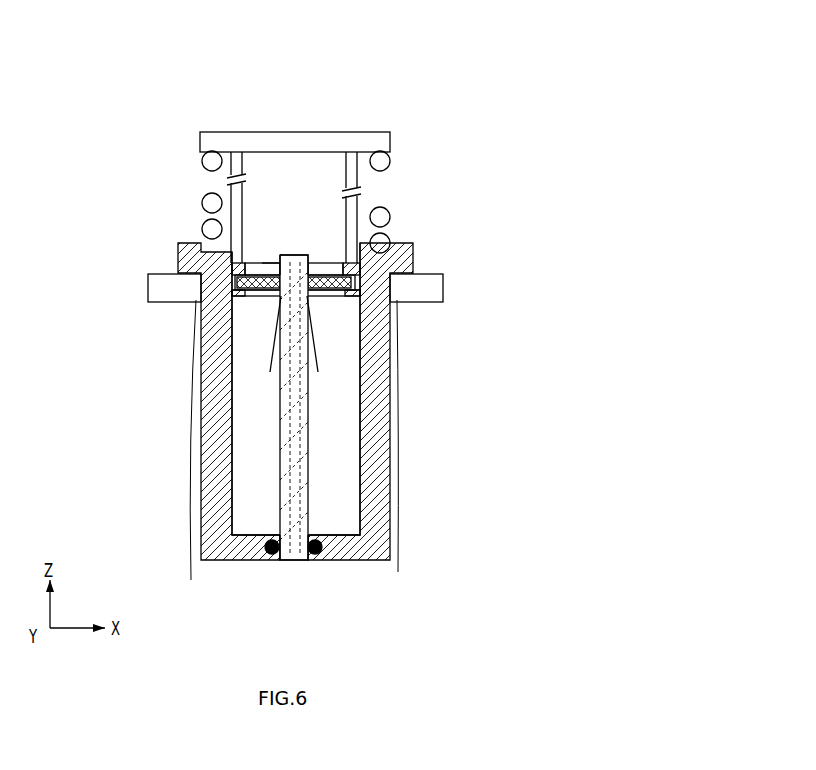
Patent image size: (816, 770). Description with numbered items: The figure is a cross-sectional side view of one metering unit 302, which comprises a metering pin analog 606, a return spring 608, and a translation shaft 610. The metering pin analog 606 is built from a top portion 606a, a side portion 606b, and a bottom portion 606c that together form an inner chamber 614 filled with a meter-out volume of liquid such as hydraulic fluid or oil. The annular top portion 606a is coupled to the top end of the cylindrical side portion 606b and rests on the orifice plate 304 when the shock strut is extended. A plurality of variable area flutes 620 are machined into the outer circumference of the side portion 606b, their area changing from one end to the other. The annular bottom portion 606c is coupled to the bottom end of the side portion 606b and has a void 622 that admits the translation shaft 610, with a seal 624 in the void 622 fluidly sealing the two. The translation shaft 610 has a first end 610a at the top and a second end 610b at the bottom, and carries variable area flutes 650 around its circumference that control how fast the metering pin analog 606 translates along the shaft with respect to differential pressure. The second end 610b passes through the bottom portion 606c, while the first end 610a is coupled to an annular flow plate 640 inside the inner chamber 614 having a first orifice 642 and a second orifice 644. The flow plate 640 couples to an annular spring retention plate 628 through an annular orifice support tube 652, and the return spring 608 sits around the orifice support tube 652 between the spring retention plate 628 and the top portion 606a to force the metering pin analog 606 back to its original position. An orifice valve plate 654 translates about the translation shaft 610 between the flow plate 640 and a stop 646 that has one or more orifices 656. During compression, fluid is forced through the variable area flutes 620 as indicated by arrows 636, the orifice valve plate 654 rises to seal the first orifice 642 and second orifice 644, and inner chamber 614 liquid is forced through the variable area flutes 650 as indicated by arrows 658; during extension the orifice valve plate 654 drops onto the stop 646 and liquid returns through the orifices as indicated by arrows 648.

The metering unit 302 is at (119, 66).
The orifice plate 304 is at (148, 291).
The metering pin analog 606 is at (421, 255).
The top portion 606a is at (421, 254).
The side portion 606b is at (386, 442).
The bottom portion 606c is at (353, 556).
The return spring 608 is at (394, 160).
The translation shaft 610 is at (313, 381).
The first end 610a is at (290, 263).
The second end 610b is at (293, 560).
The inner chamber 614 is at (232, 492).
The variable area flutes 620 is at (213, 444).
The void 622 is at (312, 558).
The seal 624 is at (270, 553).
The spring retention plate 628 is at (391, 143).
The arrows 636 is at (208, 233).
The flow plate 640 is at (233, 265).
The first orifice 642 is at (318, 264).
The second orifice 644 is at (254, 264).
The stop 646 is at (317, 302).
The arrows 648 is at (275, 258).
The variable area flutes 650 is at (283, 382).
The orifice support tube 652 is at (357, 207).
The orifice valve plate 654 is at (232, 295).
The orifices 656 is at (318, 336).
The arrows 658 is at (283, 337).